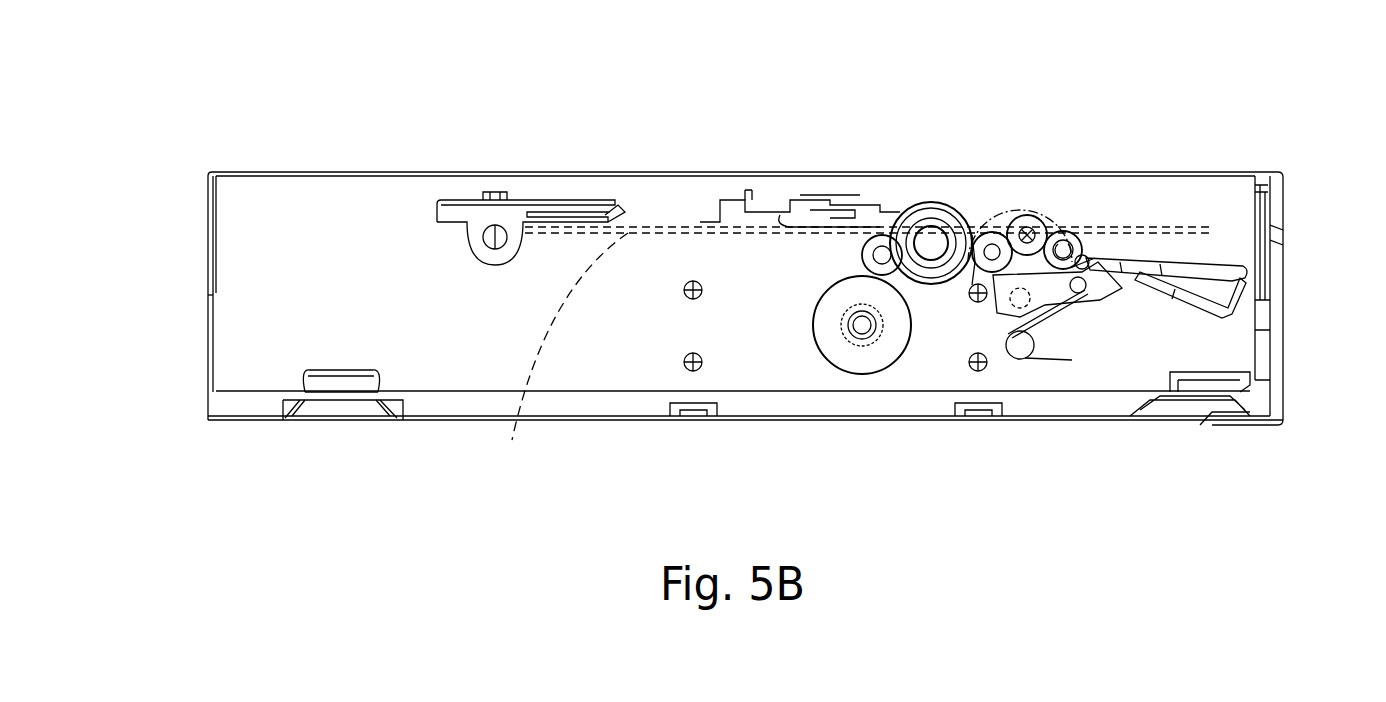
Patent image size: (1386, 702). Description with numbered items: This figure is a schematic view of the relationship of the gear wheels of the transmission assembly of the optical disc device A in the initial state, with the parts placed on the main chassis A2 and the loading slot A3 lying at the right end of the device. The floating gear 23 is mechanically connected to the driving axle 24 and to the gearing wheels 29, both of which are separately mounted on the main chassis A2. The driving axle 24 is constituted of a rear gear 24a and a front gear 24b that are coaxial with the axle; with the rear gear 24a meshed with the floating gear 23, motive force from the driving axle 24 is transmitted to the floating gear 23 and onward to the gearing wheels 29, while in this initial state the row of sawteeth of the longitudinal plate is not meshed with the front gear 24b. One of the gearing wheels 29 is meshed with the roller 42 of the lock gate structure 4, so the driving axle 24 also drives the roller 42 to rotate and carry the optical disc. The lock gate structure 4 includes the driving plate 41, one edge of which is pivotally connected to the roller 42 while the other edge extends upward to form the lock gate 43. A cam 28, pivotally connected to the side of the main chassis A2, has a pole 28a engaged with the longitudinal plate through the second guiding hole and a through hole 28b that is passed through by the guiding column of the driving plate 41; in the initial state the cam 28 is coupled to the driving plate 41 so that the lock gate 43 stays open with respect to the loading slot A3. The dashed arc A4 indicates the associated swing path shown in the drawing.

The optical disc device A is at (490, 166).
The main chassis A2 is at (207, 236).
The loading slot A3 is at (1284, 238).
The swing path A4 is at (562, 370).
The lock gate structure 4 is at (1250, 122).
The driving plate 41 is at (1140, 276).
The roller 42 is at (1086, 232).
The lock gate 43 is at (1232, 268).
The floating gear 23 is at (865, 277).
The driving axle 24 is at (957, 492).
The rear gear 24a is at (858, 345).
The front gear 24b is at (880, 335).
The cam 28 is at (1087, 508).
The pole 28a is at (965, 262).
The through hole 28b is at (1072, 292).
The gearing wheel 29 is at (1027, 215).